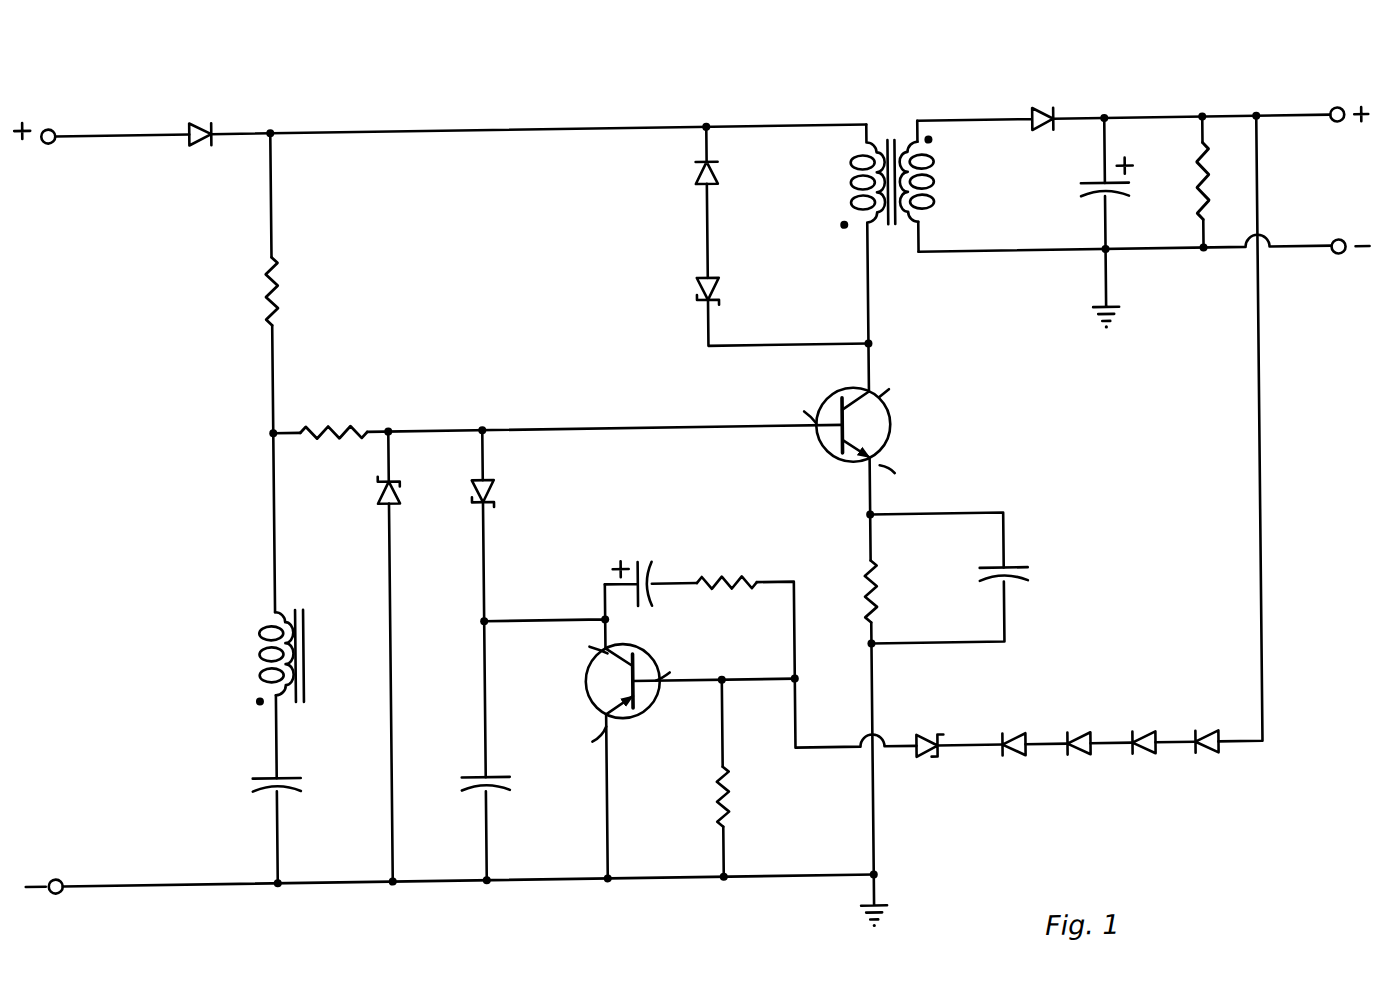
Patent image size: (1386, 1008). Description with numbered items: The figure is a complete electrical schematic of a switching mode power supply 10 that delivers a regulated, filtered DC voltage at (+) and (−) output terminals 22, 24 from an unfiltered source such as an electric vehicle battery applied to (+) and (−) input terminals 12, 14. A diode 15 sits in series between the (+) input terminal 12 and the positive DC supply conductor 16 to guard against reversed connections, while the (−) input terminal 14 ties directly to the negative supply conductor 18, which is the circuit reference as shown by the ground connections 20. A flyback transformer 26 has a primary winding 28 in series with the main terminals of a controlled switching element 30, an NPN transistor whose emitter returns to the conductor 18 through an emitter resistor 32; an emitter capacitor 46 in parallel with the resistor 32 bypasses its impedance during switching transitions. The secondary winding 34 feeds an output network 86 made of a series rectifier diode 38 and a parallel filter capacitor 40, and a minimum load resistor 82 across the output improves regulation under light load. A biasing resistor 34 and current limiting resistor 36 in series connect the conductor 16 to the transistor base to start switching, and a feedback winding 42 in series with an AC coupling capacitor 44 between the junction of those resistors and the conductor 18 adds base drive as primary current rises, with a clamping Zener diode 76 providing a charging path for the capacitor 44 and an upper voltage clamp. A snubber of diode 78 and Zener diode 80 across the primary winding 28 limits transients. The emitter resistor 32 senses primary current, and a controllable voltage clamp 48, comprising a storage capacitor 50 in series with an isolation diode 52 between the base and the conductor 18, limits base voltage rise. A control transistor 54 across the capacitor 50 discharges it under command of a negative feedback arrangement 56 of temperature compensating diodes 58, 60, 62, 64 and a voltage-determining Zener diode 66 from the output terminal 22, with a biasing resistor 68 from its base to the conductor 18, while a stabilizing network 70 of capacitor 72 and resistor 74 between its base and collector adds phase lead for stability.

The switching mode power supply 10 is at (1096, 100).
The (+) input terminal 12 is at (47, 118).
The (−) input terminal 14 is at (53, 885).
The diode 15 is at (205, 114).
The positive DC supply conductor 16 is at (497, 124).
The negative supply conductor 18 is at (540, 882).
The ground connections 20 is at (864, 908).
The (+) output terminal 22 is at (1341, 117).
The (−) output terminal 24 is at (1341, 263).
The flyback transformer 26 is at (857, 227).
The primary winding 28 is at (858, 182).
The controlled switching element 30 is at (895, 430).
The emitter resistor 32 is at (866, 590).
The secondary winding / biasing resistor 34 is at (268, 296).
The current limiting resistor 36 is at (342, 424).
The series rectifier diode 38 is at (1042, 114).
The parallel filter capacitor 40 is at (1097, 192).
The feedback winding 42 is at (258, 668).
The AC coupling capacitor 44 is at (266, 772).
The emitter capacitor 46 is at (1025, 575).
The controllable voltage clamp 48 is at (664, 412).
The storage capacitor 50 is at (478, 770).
The isolation diode 52 is at (495, 495).
The control transistor 54 is at (650, 714).
The negative feedback arrangement 56 is at (1026, 466).
The temperature compensating diode 58 is at (1212, 768).
The temperature compensating diode 60 is at (1147, 768).
The temperature compensating diode 62 is at (1082, 768).
The temperature compensating diode 64 is at (1018, 768).
The voltage-determining Zener diode 66 is at (928, 770).
The biasing resistor 68 is at (727, 792).
The stabilizing network 70 is at (776, 548).
The capacitor 72 is at (648, 575).
The resistor 74 is at (738, 590).
The clamping Zener diode 76 is at (380, 493).
The diode 78 is at (698, 173).
The Zener diode 80 is at (698, 287).
The minimum load resistor 82 is at (1200, 185).
The output network 86 is at (1163, 108).